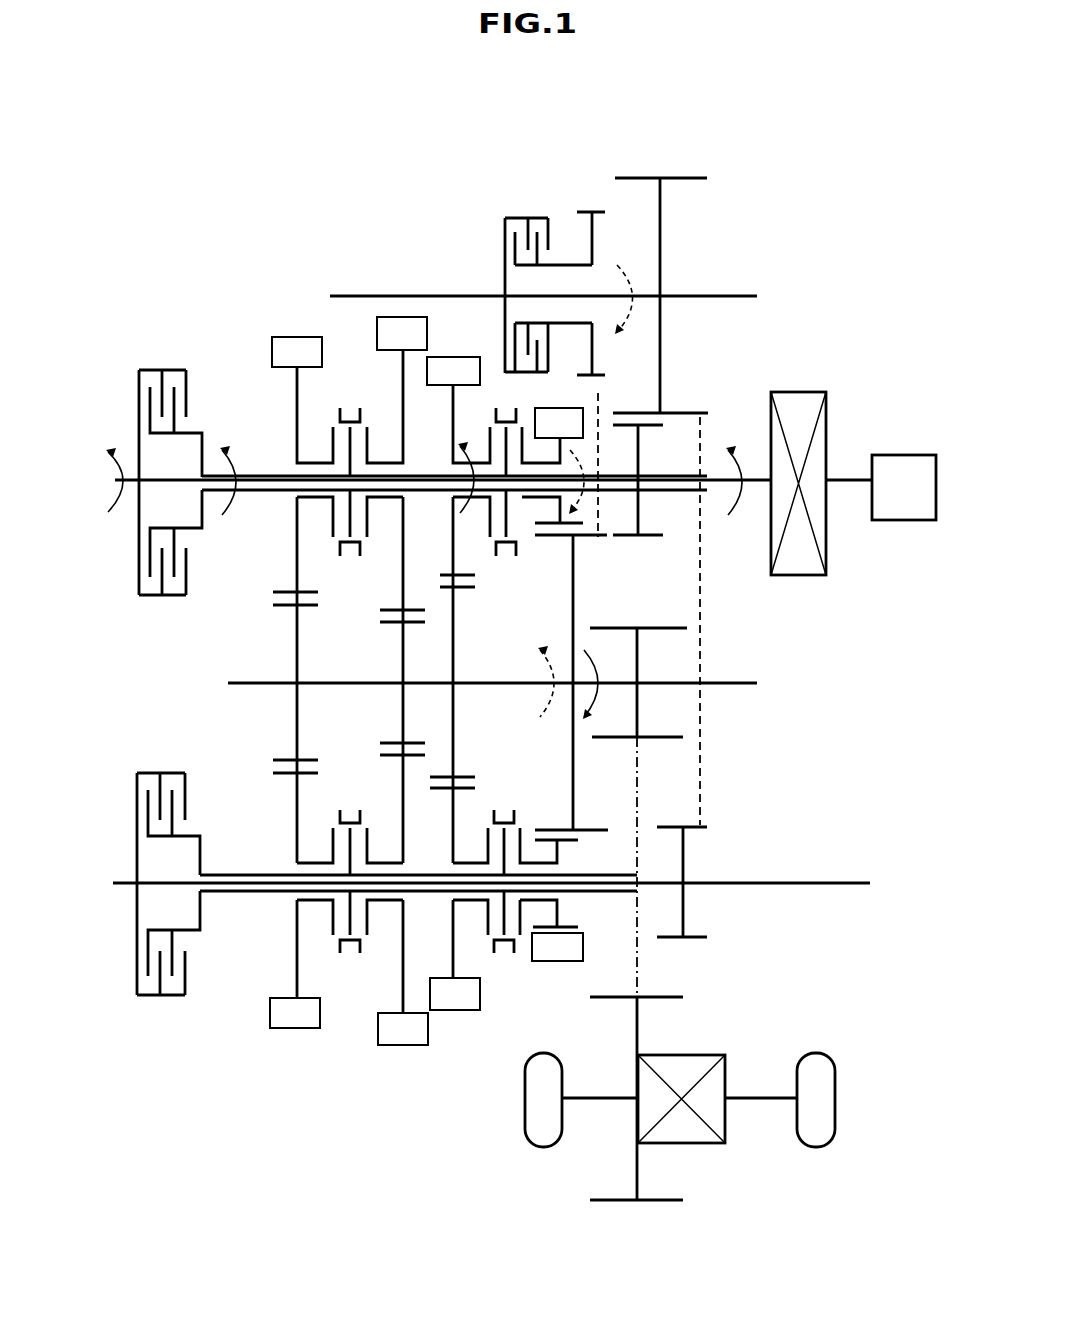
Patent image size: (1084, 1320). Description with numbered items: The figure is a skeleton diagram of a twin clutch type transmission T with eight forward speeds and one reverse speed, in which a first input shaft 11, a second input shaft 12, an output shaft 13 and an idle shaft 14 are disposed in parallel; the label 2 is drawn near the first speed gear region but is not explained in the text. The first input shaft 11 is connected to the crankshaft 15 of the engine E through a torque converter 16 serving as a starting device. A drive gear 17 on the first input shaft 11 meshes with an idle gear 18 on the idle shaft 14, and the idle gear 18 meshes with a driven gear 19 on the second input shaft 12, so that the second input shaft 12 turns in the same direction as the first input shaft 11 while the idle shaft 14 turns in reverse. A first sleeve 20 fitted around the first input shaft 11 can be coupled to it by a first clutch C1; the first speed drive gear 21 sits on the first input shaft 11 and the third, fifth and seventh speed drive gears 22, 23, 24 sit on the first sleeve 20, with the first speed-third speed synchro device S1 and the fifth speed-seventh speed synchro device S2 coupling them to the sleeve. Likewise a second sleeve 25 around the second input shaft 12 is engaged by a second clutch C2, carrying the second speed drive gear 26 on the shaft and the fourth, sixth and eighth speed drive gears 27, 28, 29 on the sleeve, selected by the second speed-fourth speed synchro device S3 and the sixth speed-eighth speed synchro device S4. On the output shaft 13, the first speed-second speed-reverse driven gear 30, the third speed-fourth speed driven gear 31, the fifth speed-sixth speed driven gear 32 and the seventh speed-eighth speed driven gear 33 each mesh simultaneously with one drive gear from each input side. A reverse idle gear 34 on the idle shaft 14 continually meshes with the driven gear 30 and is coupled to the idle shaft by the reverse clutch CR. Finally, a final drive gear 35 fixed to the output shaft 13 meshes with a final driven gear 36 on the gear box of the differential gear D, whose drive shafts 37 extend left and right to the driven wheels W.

The twin clutch type transmission T is at (313, 283).
The first-speed driven gear unit 2 is at (552, 411).
The first input shaft 11 is at (722, 470).
The second input shaft 12 is at (750, 882).
The output shaft 13 is at (757, 683).
The idle shaft 14 is at (755, 294).
The crankshaft 15 is at (843, 477).
The torque converter 16 is at (797, 393).
The drive gear 17 is at (652, 537).
The idle gear 18 is at (700, 180).
The driven gear 19 is at (707, 827).
The first sleeve 20 is at (272, 474).
The first speed drive gear 21 is at (535, 432).
The third speed drive gear 22 is at (481, 370).
The fifth speed drive gear 23 is at (322, 366).
The seventh speed drive gear 24 is at (427, 348).
The second sleeve 25 is at (272, 873).
The second speed drive gear 26 is at (578, 927).
The fourth speed drive gear 27 is at (480, 982).
The sixth speed drive gear 28 is at (270, 997).
The eighth speed drive gear 29 is at (378, 1012).
The first speed-second speed-reverse driven gear 30 is at (580, 537).
The third speed-fourth speed driven gear 31 is at (477, 589).
The fifth speed-sixth speed driven gear 32 is at (318, 604).
The seventh speed-eighth speed driven gear 33 is at (425, 621).
The reverse idle gear 34 is at (590, 210).
The final drive gear 35 is at (650, 737).
The final driven gear 36 is at (665, 995).
The drive shafts 37 is at (612, 1097).
The first clutch C1 is at (137, 402).
The second clutch C2 is at (135, 822).
The reverse clutch CR is at (532, 214).
The differential gear D is at (693, 1062).
The engine E is at (904, 487).
The first speed-third speed synchro device S1 is at (506, 552).
The fifth speed-seventh speed synchro device S2 is at (350, 556).
The second speed-fourth speed synchro device S3 is at (500, 810).
The sixth speed-eighth speed synchro device S4 is at (347, 810).
The driven wheels W is at (522, 1108).